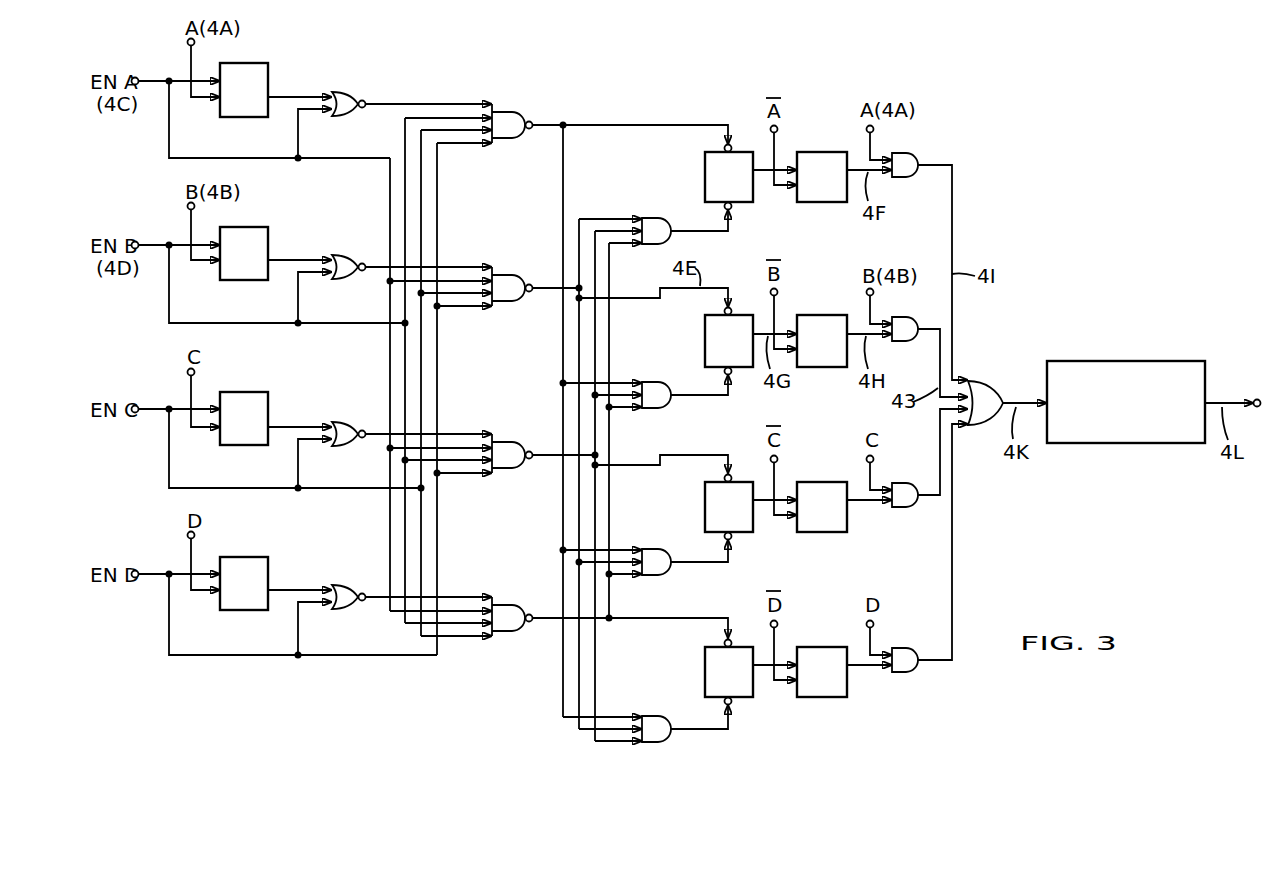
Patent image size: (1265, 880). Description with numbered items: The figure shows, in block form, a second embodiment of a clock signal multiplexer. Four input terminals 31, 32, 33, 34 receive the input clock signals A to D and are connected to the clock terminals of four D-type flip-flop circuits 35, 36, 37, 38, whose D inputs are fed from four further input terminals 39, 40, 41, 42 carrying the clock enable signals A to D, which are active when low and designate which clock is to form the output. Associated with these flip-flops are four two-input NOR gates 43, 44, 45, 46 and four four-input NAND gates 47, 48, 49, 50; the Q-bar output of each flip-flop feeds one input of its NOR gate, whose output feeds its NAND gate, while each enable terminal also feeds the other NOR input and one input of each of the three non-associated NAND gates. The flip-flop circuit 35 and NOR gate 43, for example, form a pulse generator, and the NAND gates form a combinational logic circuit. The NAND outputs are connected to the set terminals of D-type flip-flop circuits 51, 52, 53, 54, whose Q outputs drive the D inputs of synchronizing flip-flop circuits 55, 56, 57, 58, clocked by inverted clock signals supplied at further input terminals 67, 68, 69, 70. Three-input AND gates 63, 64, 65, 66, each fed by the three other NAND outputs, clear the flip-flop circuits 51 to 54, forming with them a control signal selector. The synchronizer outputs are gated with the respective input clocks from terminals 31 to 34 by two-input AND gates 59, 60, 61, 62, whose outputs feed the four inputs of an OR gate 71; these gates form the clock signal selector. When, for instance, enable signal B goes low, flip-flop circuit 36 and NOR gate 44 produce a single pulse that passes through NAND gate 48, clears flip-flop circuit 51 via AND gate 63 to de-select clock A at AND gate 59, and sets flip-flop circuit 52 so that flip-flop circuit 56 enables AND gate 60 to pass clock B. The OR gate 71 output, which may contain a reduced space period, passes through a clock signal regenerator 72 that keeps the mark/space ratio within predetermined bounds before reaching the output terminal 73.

The input terminal 31 is at (194, 45).
The input terminal 32 is at (194, 209).
The input terminal 33 is at (194, 375).
The input terminal 34 is at (194, 538).
The D-type flip-flop circuit 35 is at (258, 63).
The D-type flip-flop circuit 36 is at (258, 227).
The D-type flip-flop circuit 37 is at (258, 392).
The D-type flip-flop circuit 38 is at (258, 557).
The further input terminal 39 is at (138, 78).
The further input terminal 40 is at (138, 242).
The further input terminal 41 is at (138, 406).
The further input terminal 42 is at (138, 571).
The two-input NOR gate 43 is at (356, 94).
The two-input NOR gate 44 is at (356, 257).
The two-input NOR gate 45 is at (356, 424).
The two-input NOR gate 46 is at (356, 587).
The four-input NAND gate 47 is at (512, 113).
The four-input NAND gate 48 is at (512, 276).
The four-input NAND gate 49 is at (512, 443).
The four-input NAND gate 50 is at (512, 606).
The D-type flip-flop circuit 51 is at (705, 178).
The D-type flip-flop circuit 52 is at (705, 355).
The D-type flip-flop circuit 53 is at (705, 514).
The D-type flip-flop circuit 54 is at (705, 679).
The D-type flip-flop circuit 55 is at (824, 202).
The D-type flip-flop circuit 56 is at (823, 367).
The D-type flip-flop circuit 57 is at (816, 532).
The D-type flip-flop circuit 58 is at (818, 697).
The two-input AND gate 59 is at (904, 186).
The two-input AND gate 60 is at (900, 341).
The two-input AND gate 61 is at (899, 507).
The two-input AND gate 62 is at (903, 672).
The three-input AND gate 63 is at (662, 218).
The three-input AND gate 64 is at (662, 382).
The three-input AND gate 65 is at (660, 549).
The three-input AND gate 66 is at (658, 716).
The further input terminal 67 is at (779, 129).
The further input terminal 68 is at (779, 292).
The further input terminal 69 is at (779, 459).
The further input terminal 70 is at (779, 624).
The OR gate 71 is at (990, 386).
The clock signal regenerator 72 is at (1143, 361).
The output terminal 73 is at (1253, 399).